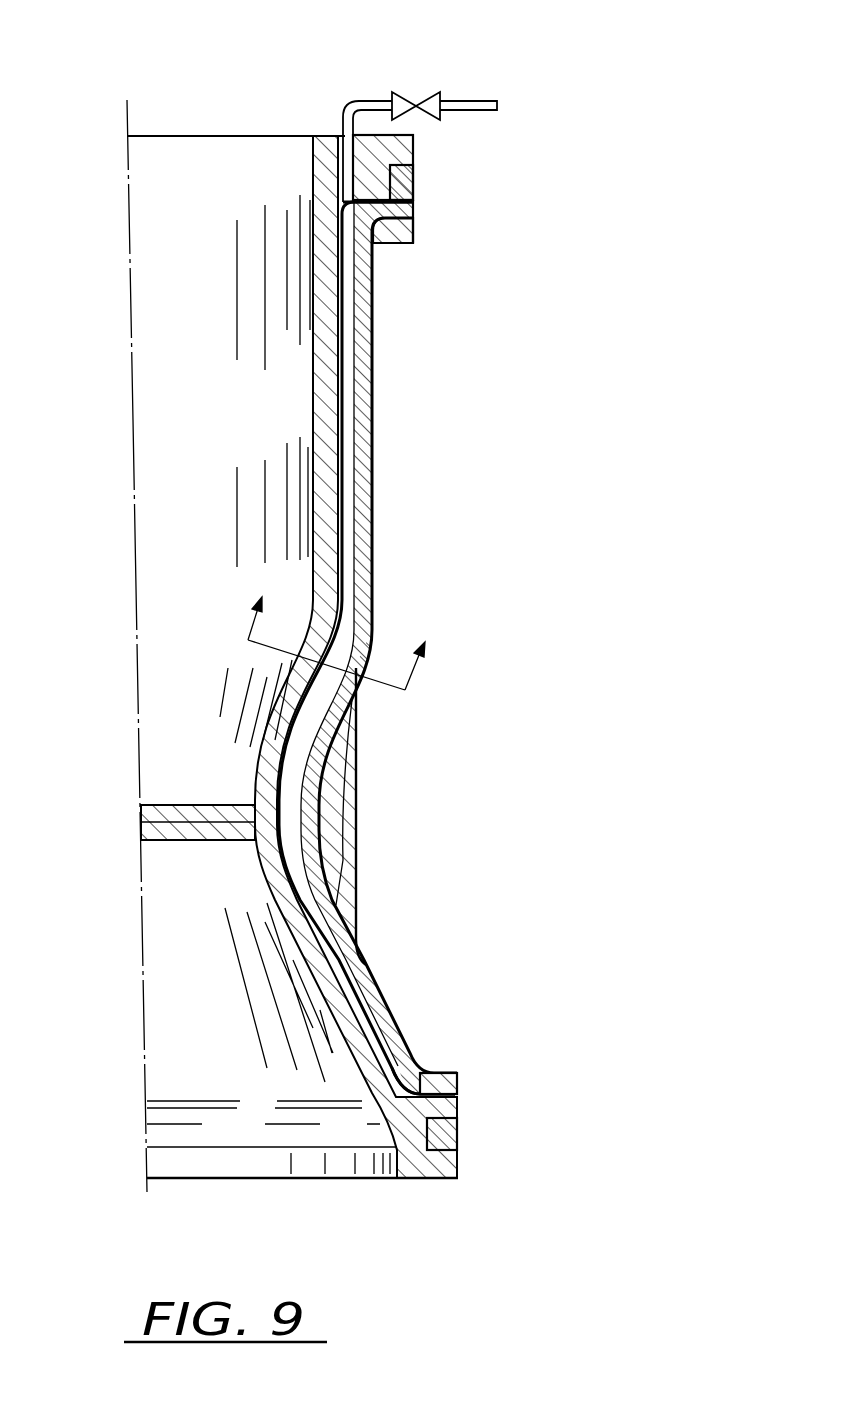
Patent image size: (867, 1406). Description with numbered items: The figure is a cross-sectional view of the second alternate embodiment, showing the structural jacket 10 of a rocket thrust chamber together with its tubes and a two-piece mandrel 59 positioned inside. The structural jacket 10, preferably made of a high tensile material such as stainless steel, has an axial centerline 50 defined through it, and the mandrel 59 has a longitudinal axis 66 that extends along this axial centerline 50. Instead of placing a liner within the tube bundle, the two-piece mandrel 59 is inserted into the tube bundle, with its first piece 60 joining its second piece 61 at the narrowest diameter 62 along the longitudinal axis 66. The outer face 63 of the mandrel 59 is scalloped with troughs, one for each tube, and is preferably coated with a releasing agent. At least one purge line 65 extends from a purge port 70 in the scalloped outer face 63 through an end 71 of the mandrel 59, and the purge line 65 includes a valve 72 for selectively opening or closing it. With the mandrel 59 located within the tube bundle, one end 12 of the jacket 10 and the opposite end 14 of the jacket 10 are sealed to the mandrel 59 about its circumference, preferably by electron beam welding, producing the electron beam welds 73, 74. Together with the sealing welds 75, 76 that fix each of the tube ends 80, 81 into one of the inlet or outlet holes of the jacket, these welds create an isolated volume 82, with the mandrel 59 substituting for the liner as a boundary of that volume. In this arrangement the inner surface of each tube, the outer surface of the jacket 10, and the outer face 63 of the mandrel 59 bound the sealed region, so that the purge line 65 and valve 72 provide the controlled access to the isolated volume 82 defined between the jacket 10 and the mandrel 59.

The structural jacket 10 is at (430, 942).
The end of the jacket 12 is at (413, 158).
The opposite end of the structural jacket 14 is at (443, 1157).
The axial centerline 50 is at (137, 470).
The two-piece mandrel 59 is at (134, 375).
The first piece 60 is at (162, 743).
The second piece 61 is at (167, 970).
The narrowest diameter 62 is at (162, 840).
The outer face of the mandrel 63 is at (292, 777).
The purge line 65 is at (478, 100).
The longitudinal axis 66 is at (138, 625).
The purge port 70 is at (374, 243).
The end of the mandrel 71 is at (197, 135).
The valve 72 is at (415, 94).
The electron beam weld 73 is at (413, 173).
The electron beam weld 74 is at (457, 1156).
The sealing weld 75 is at (413, 207).
The sealing weld 76 is at (455, 1075).
The tube end 80 is at (413, 201).
The tube end 81 is at (457, 1097).
The isolated volume 82 is at (298, 732).